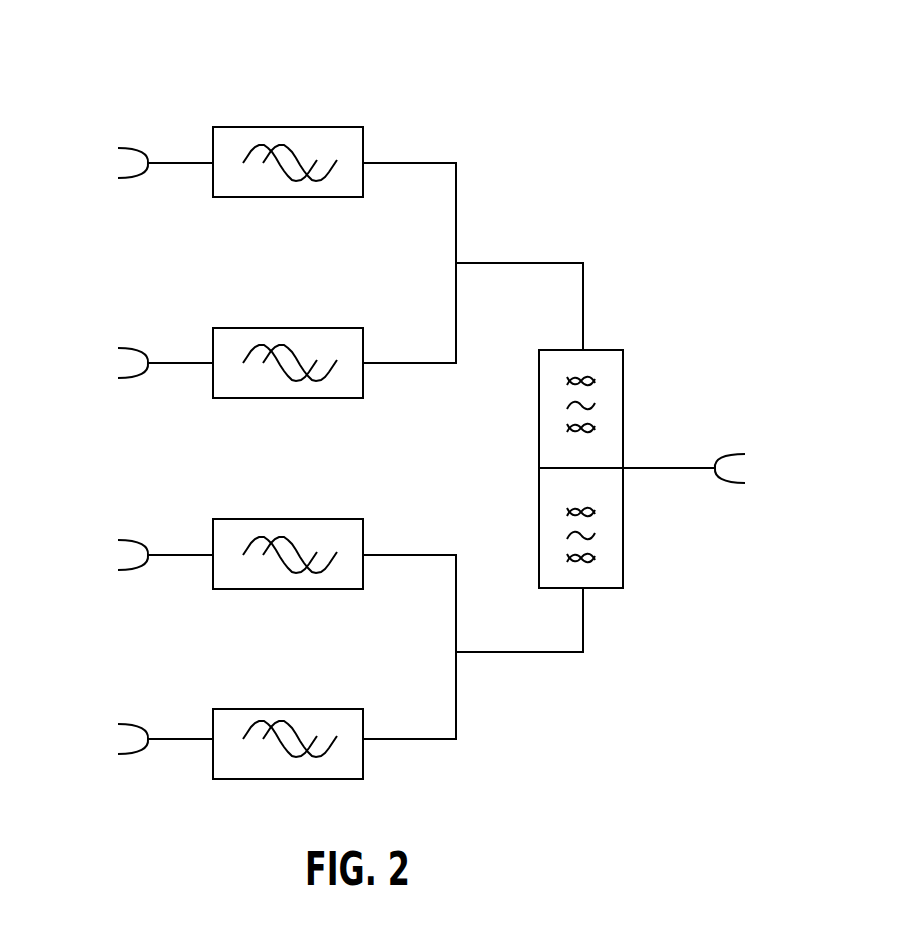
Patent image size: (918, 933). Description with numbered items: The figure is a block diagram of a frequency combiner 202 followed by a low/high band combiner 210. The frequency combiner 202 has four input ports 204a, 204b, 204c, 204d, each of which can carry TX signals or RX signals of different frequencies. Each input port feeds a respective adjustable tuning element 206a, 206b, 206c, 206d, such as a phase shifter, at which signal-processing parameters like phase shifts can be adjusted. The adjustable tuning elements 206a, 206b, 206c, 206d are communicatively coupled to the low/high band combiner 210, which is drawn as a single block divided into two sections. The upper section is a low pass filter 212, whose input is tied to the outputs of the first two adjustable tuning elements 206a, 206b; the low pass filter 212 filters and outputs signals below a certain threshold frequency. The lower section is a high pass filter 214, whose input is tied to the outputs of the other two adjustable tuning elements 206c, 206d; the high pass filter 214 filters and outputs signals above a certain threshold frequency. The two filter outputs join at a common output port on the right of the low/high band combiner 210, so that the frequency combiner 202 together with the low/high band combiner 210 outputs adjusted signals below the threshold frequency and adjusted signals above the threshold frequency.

The frequency combiner 202 is at (527, 80).
The input port 204a is at (118, 174).
The input port 204b is at (120, 374).
The input port 204c is at (118, 567).
The input port 204d is at (120, 750).
The adjustable tuning element 206a is at (364, 148).
The adjustable tuning element 206b is at (364, 349).
The adjustable tuning element 206c is at (364, 540).
The adjustable tuning element 206d is at (364, 729).
The low/high band combiner 210 is at (575, 469).
The low pass filter 212 is at (614, 413).
The high pass filter 214 is at (614, 545).